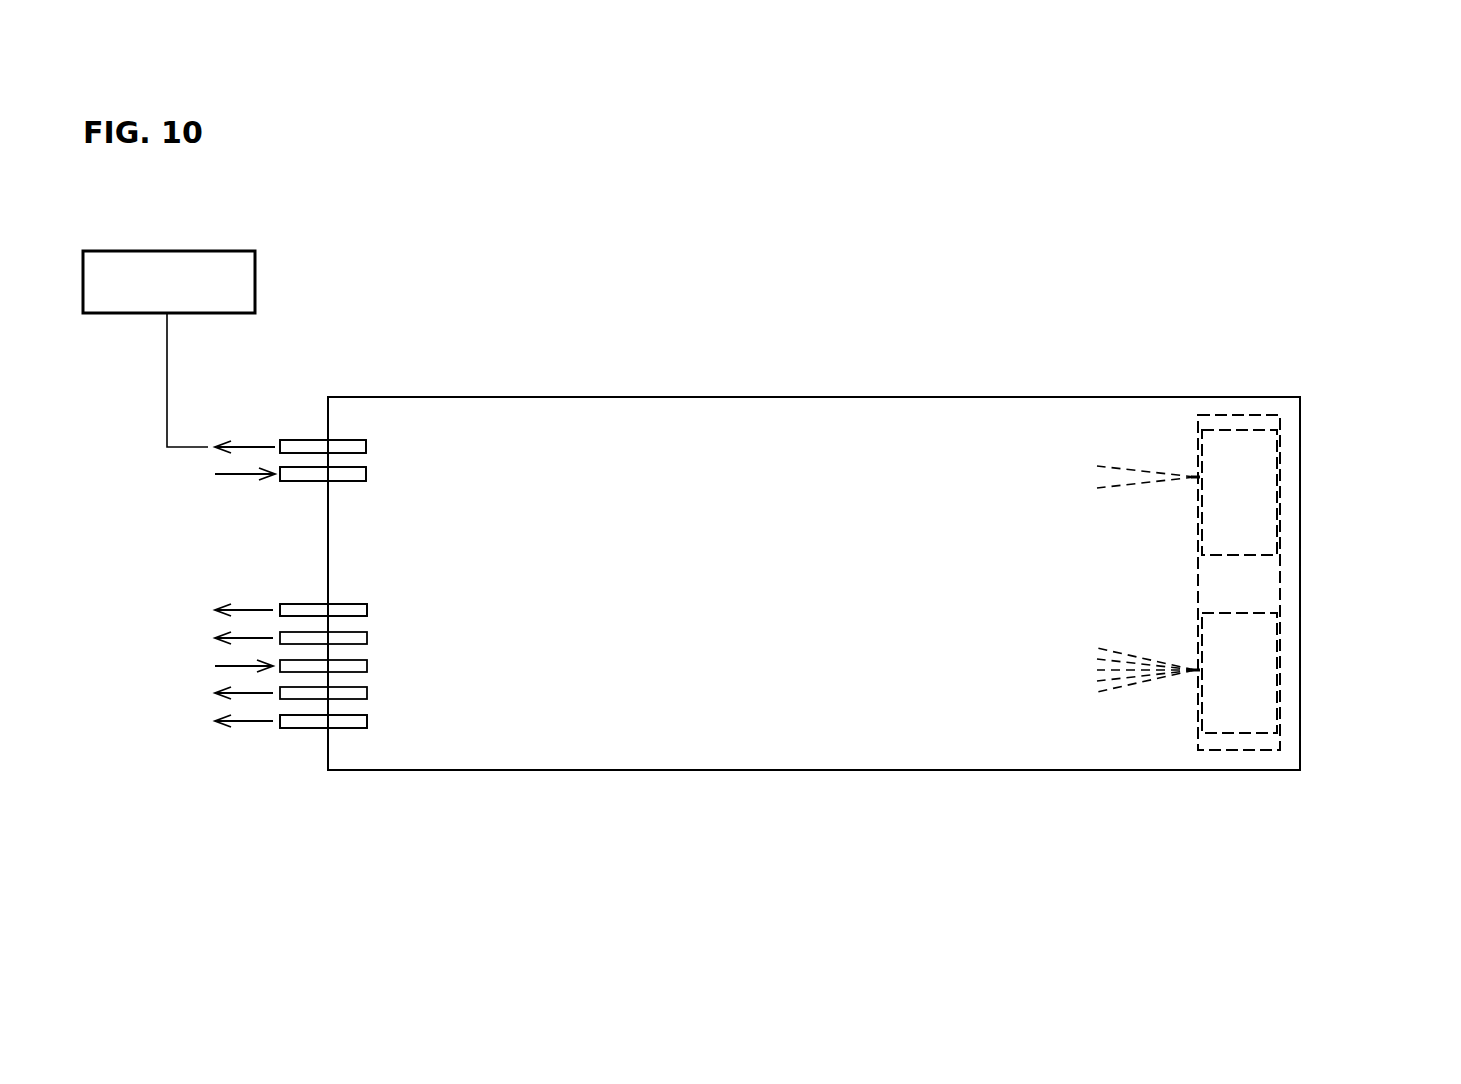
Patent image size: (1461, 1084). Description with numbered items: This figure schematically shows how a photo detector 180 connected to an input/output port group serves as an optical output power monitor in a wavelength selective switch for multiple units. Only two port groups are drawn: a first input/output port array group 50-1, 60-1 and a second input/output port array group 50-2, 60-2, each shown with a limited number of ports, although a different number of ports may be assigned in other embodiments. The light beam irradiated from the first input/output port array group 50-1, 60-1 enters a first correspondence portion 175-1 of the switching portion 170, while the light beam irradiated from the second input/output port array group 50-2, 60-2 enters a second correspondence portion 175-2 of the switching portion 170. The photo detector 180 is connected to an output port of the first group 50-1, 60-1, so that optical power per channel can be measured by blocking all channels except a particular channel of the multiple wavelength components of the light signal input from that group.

The photo detector 180 is at (228, 251).
The first input/output port array group 50-1 is at (303, 425).
The first input/output port array group 60-1 is at (323, 460).
The second input/output port array group 50-2 is at (298, 741).
The second input/output port array group 60-2 is at (323, 666).
The switching portion 170 is at (1256, 583).
The first correspondence portion 175-1 is at (1258, 478).
The second correspondence portion 175-2 is at (1257, 678).